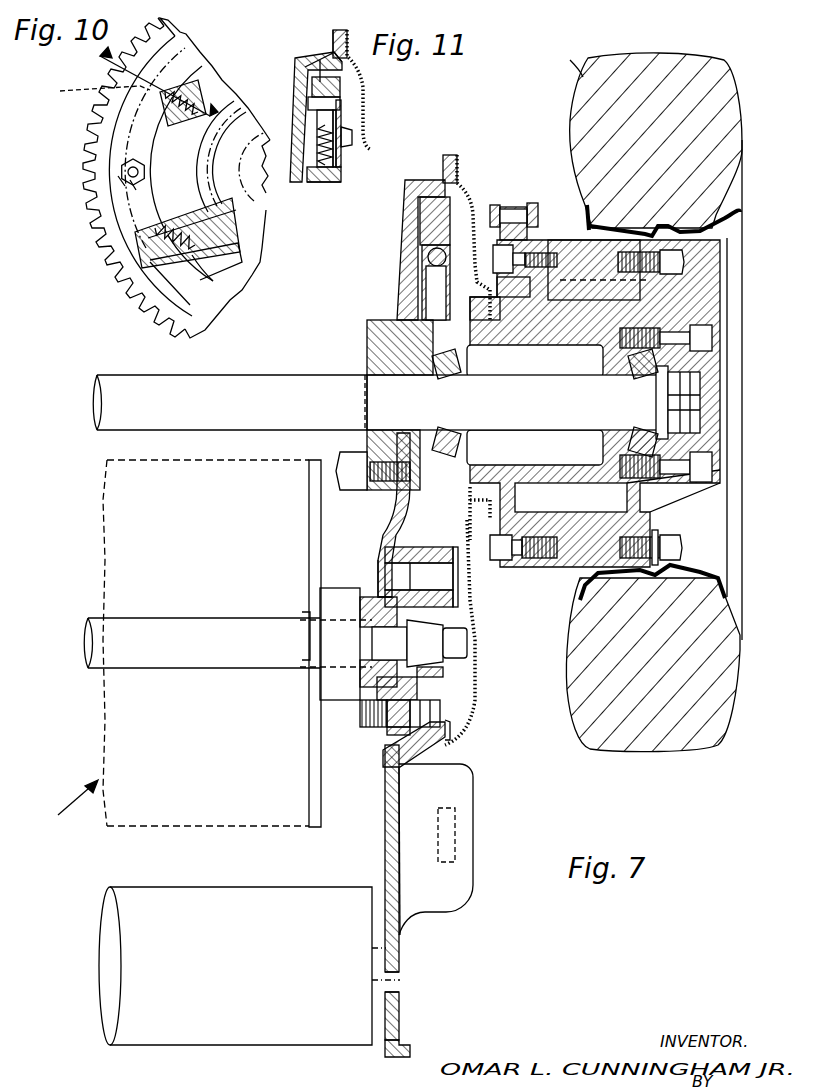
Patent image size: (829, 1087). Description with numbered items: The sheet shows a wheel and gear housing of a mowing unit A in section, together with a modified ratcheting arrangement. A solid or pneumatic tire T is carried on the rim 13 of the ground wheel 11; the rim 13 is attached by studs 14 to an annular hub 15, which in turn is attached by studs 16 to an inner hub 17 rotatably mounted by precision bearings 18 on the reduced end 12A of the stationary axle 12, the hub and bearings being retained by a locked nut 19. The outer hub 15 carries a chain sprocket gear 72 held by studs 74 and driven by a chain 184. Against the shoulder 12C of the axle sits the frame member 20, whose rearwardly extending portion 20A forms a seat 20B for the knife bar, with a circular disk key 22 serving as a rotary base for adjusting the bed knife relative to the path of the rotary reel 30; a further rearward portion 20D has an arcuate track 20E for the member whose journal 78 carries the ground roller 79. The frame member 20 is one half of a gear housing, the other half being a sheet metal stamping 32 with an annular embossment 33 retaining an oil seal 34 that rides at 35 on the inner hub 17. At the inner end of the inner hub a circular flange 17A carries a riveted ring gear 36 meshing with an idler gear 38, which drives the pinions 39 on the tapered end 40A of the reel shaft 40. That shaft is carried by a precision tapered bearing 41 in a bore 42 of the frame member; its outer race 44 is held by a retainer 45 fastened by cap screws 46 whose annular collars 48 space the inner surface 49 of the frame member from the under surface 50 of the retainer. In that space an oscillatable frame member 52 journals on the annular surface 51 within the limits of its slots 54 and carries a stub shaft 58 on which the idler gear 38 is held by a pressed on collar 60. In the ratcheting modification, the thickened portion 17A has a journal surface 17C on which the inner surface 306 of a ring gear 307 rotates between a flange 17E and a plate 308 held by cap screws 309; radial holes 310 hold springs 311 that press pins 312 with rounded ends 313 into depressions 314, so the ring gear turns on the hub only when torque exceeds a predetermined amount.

In FIG. 10, the ground wheel 11 is at (149, 95).
In FIG. 7, the ground wheel 11 is at (671, 62).
In FIG. 7, the axle 12 is at (292, 376).
In FIG. 7, the reduced end of the axle 12A is at (510, 392).
In FIG. 7, the shoulder of the axle 12C is at (372, 380).
In FIG. 7, the rim 13 is at (732, 212).
In FIG. 7, the studs 14 is at (684, 262).
In FIG. 7, the annular hub 15 is at (560, 240).
In FIG. 7, the studs 16 is at (712, 338).
In FIG. 7, the inner hub 17 is at (548, 337).
In FIG. 10, the circular flange of the inner hub 17A is at (212, 262).
In FIG. 11, the circular flange of the inner hub 17A is at (332, 184).
In FIG. 7, the circular flange of the inner hub 17A is at (424, 266).
In FIG. 10, the journal surface 17C is at (190, 305).
In FIG. 11, the journal surface 17C is at (310, 104).
In FIG. 11, the flange 17E is at (312, 90).
In FIG. 7, the precision bearings 18 is at (451, 430).
In FIG. 7, the chain 184 is at (535, 203).
In FIG. 7, the nut 19 is at (702, 385).
In FIG. 11, the frame member 20 is at (300, 56).
In FIG. 7, the frame member 20 is at (386, 322).
In FIG. 7, the rearwardly extending portion of the frame member 20A is at (386, 858).
In FIG. 7, the seat 20B is at (474, 858).
In FIG. 7, the rearwardly extending portion 20D is at (400, 1038).
In FIG. 7, the arcuate track 20E is at (400, 982).
In FIG. 7, the circular disk key 22 is at (458, 818).
In FIG. 7, the rotary reel 30 is at (186, 826).
In FIG. 11, the sheet metal stamping 32 is at (352, 44).
In FIG. 7, the sheet metal stamping 32 is at (462, 183).
In FIG. 7, the annular embossment 33 is at (512, 299).
In FIG. 7, the oil seal 34 is at (483, 330).
In FIG. 7, the seal riding location 35 is at (500, 323).
In FIG. 7, the ring gear 36 is at (420, 215).
In FIG. 7, the idler gear 38 is at (400, 530).
In FIG. 7, the pinions 39 is at (428, 668).
In FIG. 7, the rotary reel shaft 40 is at (245, 626).
In FIG. 7, the tapered end of the reel shaft 40A is at (425, 647).
In FIG. 7, the precision tapered bearing 41 is at (363, 607).
In FIG. 7, the bore 42 is at (372, 612).
In FIG. 7, the outer race 44 is at (383, 692).
In FIG. 7, the retainer 45 is at (422, 688).
In FIG. 7, the cap screws 46 is at (435, 716).
In FIG. 7, the annular collars 48 is at (397, 733).
In FIG. 7, the inner surface of the frame member 49 is at (393, 720).
In FIG. 7, the under surface of the bearing retainer 50 is at (415, 748).
In FIG. 7, the annular surface 51 is at (370, 722).
In FIG. 7, the oscillatable frame member 52 is at (385, 554).
In FIG. 7, the slots 54 is at (417, 737).
In FIG. 7, the stub shaft 58 is at (382, 535).
In FIG. 7, the pressed on collar 60 is at (458, 598).
In FIG. 7, the chain sprocket gear 72 is at (511, 230).
In FIG. 7, the studs 74 is at (500, 248).
In FIG. 7, the journal 78 is at (373, 964).
In FIG. 7, the ground roller 79 is at (313, 1046).
In FIG. 10, the inner surface of the ring gear 306 is at (140, 312).
In FIG. 11, the inner surface of the ring gear 306 is at (342, 100).
In FIG. 10, the ring gear 307 is at (190, 328).
In FIG. 11, the ring gear 307 is at (342, 90).
In FIG. 10, the plate 308 is at (143, 156).
In FIG. 11, the plate 308 is at (333, 118).
In FIG. 10, the cap screws 309 is at (146, 181).
In FIG. 11, the cap screws 309 is at (352, 137).
In FIG. 10, the radial holes 310 is at (172, 100).
In FIG. 11, the radial holes 310 is at (341, 178).
In FIG. 10, the springs 311 is at (206, 80).
In FIG. 11, the springs 311 is at (340, 160).
In FIG. 10, the pins 312 is at (148, 96).
In FIG. 11, the pins 312 is at (340, 150).
In FIG. 10, the conical or rounded ends 313 is at (175, 40).
In FIG. 11, the conical or rounded ends 313 is at (320, 60).
In FIG. 10, the depressions 314 is at (75, 90).
In FIG. 11, the depressions 314 is at (300, 62).
In FIG. 7, the mowing unit A is at (68, 808).
In FIG. 7, the tire T is at (569, 63).